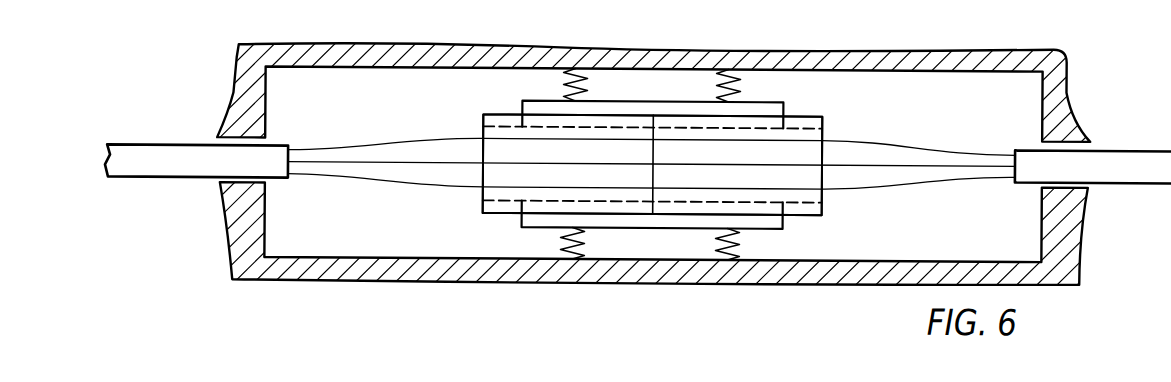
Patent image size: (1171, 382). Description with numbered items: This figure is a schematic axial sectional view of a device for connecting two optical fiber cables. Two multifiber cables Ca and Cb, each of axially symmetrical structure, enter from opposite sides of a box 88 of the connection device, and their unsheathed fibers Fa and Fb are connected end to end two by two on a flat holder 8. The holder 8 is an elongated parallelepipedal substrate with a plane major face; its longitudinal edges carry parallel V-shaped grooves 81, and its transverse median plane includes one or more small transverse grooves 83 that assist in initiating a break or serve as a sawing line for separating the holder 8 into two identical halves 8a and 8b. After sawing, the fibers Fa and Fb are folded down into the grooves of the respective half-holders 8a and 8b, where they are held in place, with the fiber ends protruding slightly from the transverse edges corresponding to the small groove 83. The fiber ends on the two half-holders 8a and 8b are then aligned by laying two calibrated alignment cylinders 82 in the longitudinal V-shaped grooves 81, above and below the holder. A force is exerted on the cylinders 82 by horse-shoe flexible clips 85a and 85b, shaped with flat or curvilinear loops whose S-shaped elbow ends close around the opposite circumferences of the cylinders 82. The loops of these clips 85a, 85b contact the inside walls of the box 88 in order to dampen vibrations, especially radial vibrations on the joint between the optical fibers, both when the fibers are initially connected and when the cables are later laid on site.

The box 88 is at (1030, 71).
The multifiber cable Ca is at (152, 160).
The multifiber cable Cb is at (1135, 157).
The optical fiber Fa is at (360, 154).
The optical fiber Fb is at (942, 152).
The holder 8 is at (490, 217).
The half-holder 8a is at (490, 179).
The half-holder 8b is at (812, 175).
The grooves 81 is at (765, 127).
The calibrated cylinders 82 is at (765, 99).
The small transverse grooves 83 is at (650, 176).
The flexible clip 85a is at (588, 77).
The flexible clip 85b is at (722, 80).